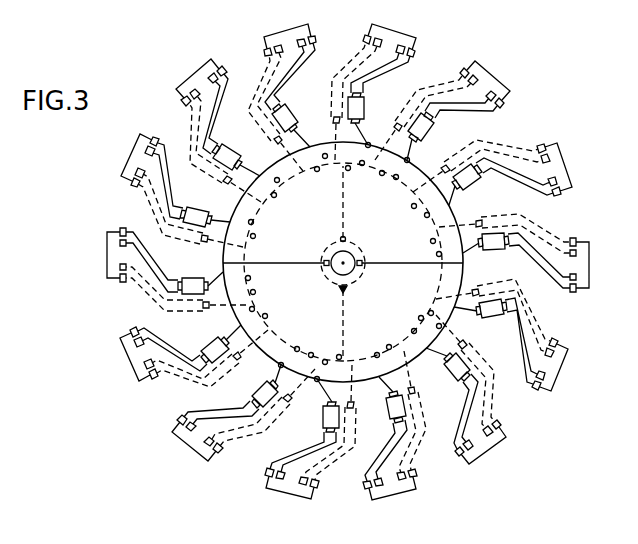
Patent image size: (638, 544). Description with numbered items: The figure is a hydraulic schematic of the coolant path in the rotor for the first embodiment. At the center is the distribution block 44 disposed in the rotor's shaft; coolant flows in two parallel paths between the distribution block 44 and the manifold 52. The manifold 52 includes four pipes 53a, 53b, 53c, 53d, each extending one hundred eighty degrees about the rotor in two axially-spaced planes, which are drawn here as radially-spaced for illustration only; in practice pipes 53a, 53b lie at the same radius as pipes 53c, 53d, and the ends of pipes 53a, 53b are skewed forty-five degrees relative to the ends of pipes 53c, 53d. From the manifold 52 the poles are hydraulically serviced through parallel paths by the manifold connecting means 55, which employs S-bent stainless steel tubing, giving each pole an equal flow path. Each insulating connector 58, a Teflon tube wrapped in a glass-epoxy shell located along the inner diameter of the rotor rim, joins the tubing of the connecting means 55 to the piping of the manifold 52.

The distribution block 44 is at (357, 256).
The manifold 52 is at (275, 186).
The pipe 53a is at (232, 313).
The pipe 53b is at (453, 207).
The pipe 53c is at (386, 178).
The pipe 53d is at (385, 352).
The manifold connecting means 55 is at (490, 111).
The insulating connector 58 is at (449, 378).